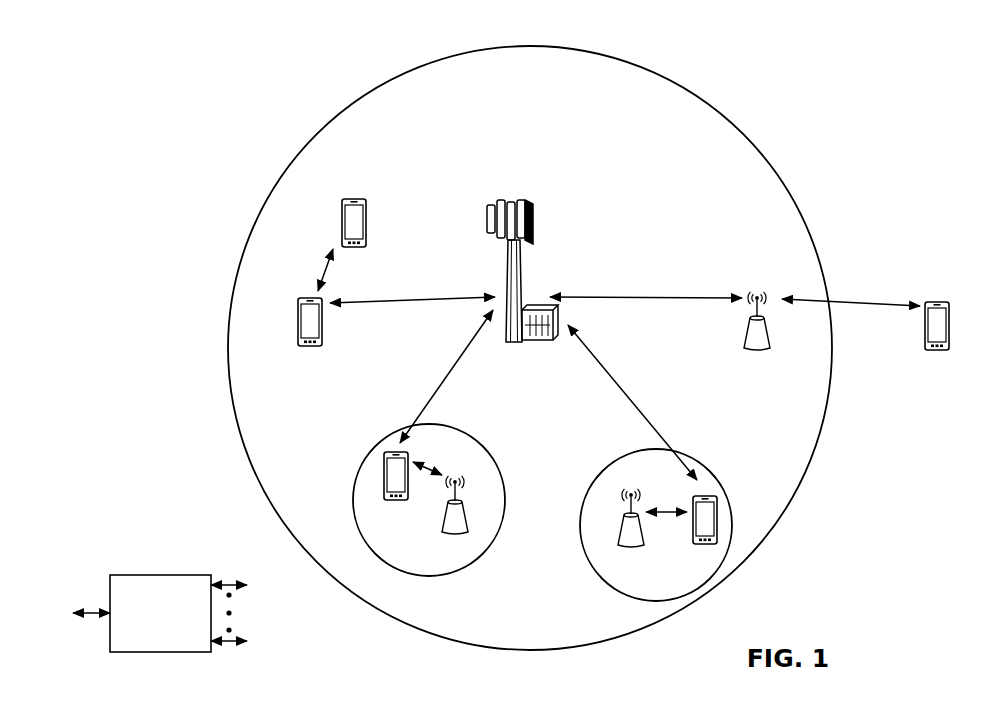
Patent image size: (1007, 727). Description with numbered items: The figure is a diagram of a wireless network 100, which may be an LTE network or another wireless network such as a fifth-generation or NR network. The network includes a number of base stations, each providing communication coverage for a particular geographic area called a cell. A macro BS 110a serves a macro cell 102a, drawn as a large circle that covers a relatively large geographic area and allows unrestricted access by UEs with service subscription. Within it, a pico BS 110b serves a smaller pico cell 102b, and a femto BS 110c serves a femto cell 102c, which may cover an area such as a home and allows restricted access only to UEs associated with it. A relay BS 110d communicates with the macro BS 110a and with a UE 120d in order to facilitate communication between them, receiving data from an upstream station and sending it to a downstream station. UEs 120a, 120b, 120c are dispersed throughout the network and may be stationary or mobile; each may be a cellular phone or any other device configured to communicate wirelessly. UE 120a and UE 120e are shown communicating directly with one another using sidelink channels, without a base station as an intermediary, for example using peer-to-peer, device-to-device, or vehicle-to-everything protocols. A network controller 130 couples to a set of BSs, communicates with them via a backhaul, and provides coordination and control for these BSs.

The wireless network 100 is at (148, 43).
The macro cell 102a is at (731, 121).
The pico cell 102b is at (489, 452).
The femto cell 102c is at (610, 462).
The macro BS 110a is at (531, 195).
The pico BS 110b is at (468, 516).
The femto BS 110c is at (620, 530).
The relay BS 110d is at (757, 291).
The UE 120a is at (297, 318).
The UE 120b is at (391, 500).
The UE 120c is at (697, 544).
The UE 120d is at (945, 302).
The UE 120e is at (342, 213).
The network controller 130 is at (157, 575).